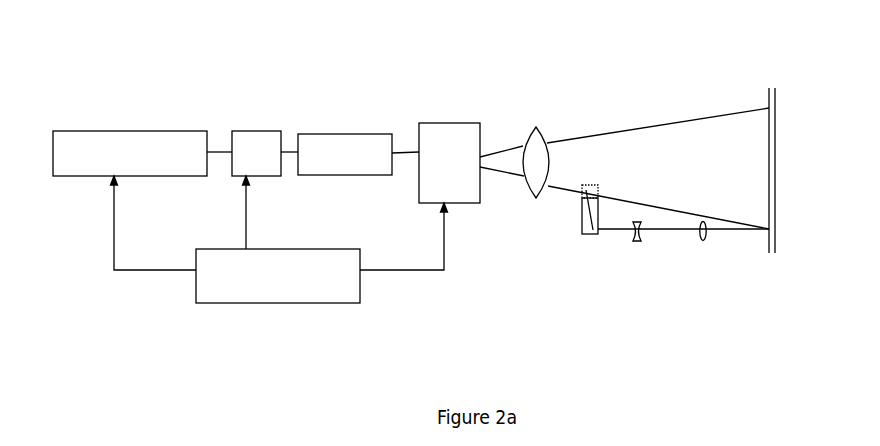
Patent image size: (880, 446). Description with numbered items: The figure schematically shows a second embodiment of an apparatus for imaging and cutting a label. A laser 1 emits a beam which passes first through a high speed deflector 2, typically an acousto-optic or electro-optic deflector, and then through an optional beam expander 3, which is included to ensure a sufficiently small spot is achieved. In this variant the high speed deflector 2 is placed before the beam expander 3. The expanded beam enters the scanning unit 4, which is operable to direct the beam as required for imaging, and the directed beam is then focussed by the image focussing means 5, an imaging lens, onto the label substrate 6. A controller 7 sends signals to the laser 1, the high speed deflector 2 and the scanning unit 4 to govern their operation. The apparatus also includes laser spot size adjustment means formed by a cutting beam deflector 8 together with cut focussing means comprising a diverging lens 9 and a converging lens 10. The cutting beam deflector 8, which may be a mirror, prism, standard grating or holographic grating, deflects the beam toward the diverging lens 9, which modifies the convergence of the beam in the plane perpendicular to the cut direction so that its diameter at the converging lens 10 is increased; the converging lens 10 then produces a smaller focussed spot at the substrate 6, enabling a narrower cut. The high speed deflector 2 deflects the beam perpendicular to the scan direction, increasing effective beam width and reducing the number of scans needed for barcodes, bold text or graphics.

The laser 1 is at (123, 127).
The high speed deflector 2 is at (252, 126).
The beam expander 3 is at (350, 128).
The scanning unit 4 is at (445, 118).
The image focussing means 5 is at (536, 116).
The label substrate 6 is at (766, 95).
The controller 7 is at (237, 305).
The cutting beam deflector 8 is at (573, 223).
The diverging lens 9 is at (640, 243).
The converging lens 10 is at (706, 243).